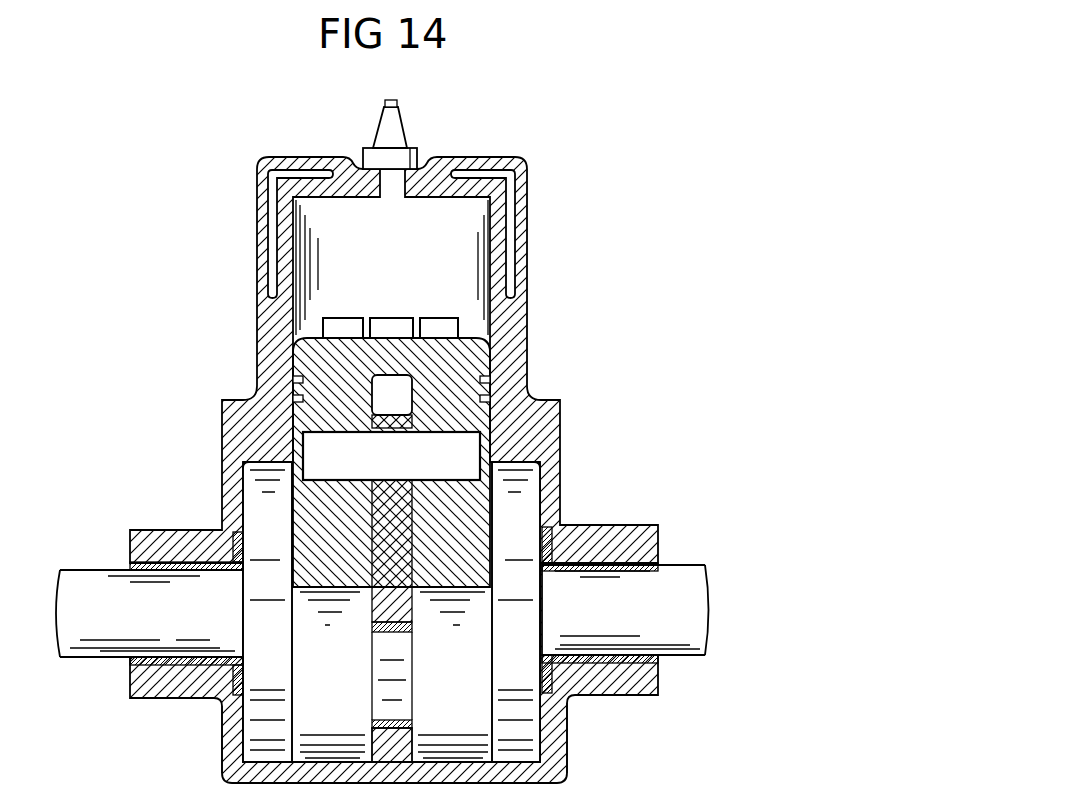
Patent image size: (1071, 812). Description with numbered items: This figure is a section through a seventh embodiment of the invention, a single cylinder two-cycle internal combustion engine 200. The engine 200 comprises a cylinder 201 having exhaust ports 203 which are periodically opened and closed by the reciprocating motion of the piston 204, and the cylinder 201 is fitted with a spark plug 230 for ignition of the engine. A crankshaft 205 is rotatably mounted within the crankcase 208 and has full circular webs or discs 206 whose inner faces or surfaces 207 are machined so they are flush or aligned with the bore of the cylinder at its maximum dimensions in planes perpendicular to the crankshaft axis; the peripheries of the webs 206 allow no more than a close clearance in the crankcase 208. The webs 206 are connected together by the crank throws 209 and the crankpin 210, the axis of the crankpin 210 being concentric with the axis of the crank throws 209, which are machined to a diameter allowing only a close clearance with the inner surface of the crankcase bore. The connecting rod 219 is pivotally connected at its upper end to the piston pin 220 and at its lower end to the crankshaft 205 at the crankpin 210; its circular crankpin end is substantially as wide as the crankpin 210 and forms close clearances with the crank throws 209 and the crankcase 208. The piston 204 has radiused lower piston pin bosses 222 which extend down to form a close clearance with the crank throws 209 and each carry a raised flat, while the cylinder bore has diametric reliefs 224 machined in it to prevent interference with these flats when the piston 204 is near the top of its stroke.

The single cylinder two-cycle internal combustion engine 200 is at (533, 148).
The cylinder 201 is at (527, 212).
The exhaust ports 203 is at (470, 322).
The piston 204 is at (482, 366).
The crankshaft 205 is at (95, 580).
The crankshaft webs 206 is at (253, 485).
The inner faces of the webs 207 is at (288, 474).
The crankcase 208 is at (568, 738).
The crank throws 209 is at (305, 748).
The crankpin 210 is at (413, 752).
The connecting rod 219 is at (393, 755).
The piston pin 220 is at (470, 435).
The lower piston pin bosses 222 is at (328, 567).
The diametric reliefs 224 is at (394, 797).
The spark plug 230 is at (403, 126).